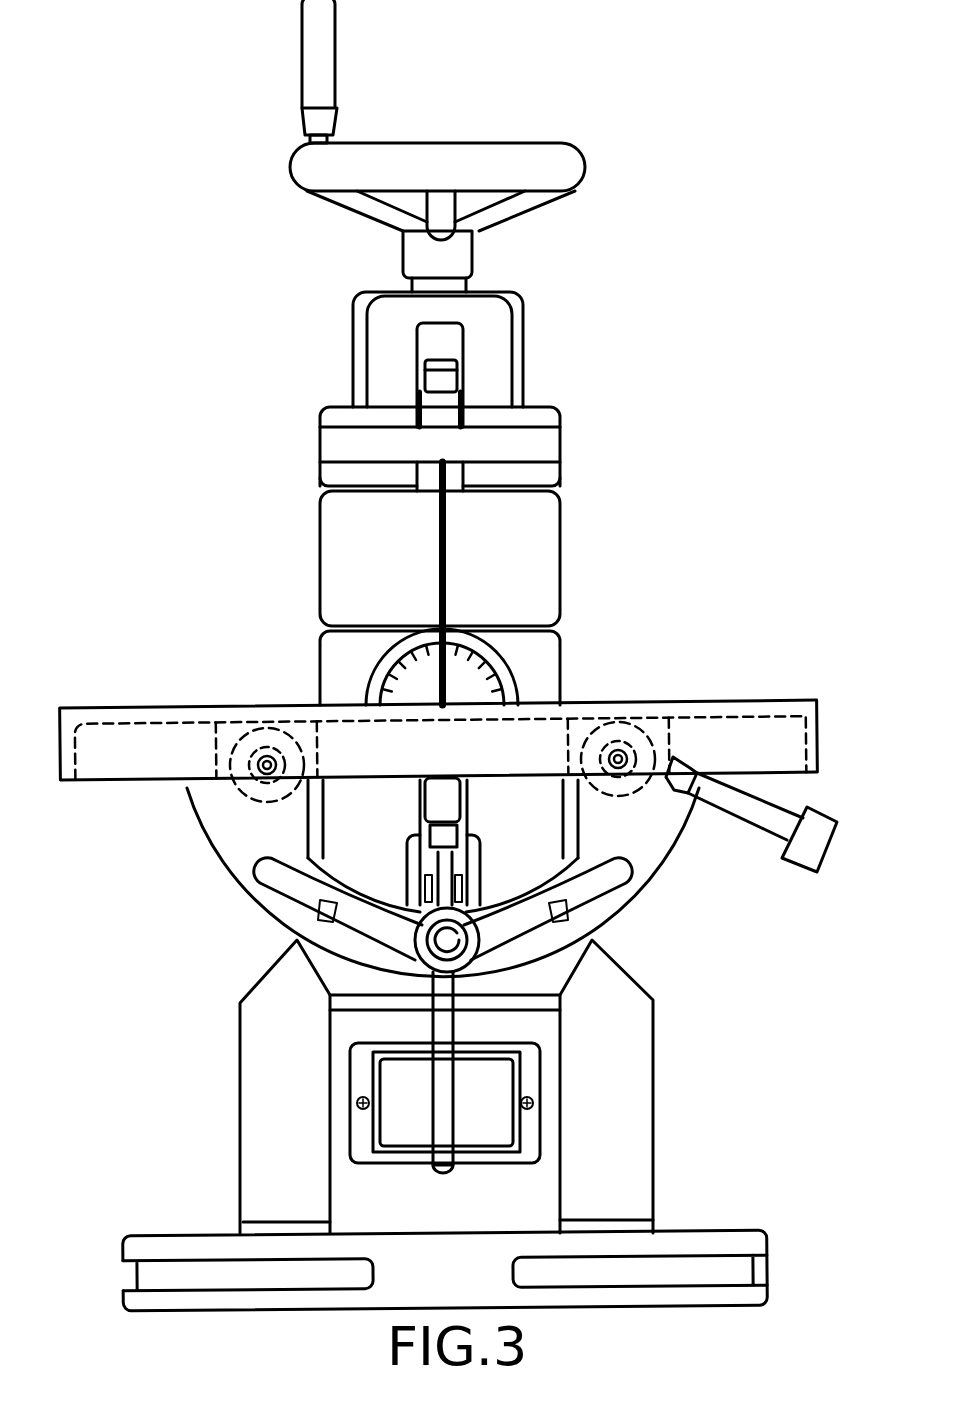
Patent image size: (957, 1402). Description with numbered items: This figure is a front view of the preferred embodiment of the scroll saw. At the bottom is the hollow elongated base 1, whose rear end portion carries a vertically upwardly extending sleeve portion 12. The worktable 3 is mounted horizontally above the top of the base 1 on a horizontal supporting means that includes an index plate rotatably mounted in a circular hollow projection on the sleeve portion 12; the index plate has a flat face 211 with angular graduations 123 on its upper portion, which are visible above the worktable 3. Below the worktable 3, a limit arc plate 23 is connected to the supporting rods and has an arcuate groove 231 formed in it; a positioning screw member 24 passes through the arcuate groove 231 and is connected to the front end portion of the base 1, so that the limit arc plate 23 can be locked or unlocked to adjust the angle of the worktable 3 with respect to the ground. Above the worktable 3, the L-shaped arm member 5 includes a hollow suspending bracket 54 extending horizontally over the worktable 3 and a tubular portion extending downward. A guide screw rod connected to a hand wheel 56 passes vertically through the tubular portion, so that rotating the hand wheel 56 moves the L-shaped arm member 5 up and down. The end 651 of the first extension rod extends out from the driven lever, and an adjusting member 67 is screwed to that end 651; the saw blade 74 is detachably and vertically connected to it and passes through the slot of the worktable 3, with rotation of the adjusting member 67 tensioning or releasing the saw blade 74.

The base 1 is at (655, 1113).
The worktable 3 is at (157, 705).
The L-shaped arm member 5 is at (547, 543).
The sleeve portion 12 is at (552, 695).
The limit arc plate 23 is at (658, 845).
The positioning screw member 24 is at (455, 938).
The suspending bracket 54 is at (520, 293).
The hand wheel 56 is at (572, 168).
The adjusting member 67 is at (425, 369).
The saw blade 74 is at (437, 528).
The angular graduations 123 is at (503, 668).
The flat face 211 is at (493, 690).
The arcuate groove 231 is at (607, 875).
The end of first extension rod 651 is at (410, 408).